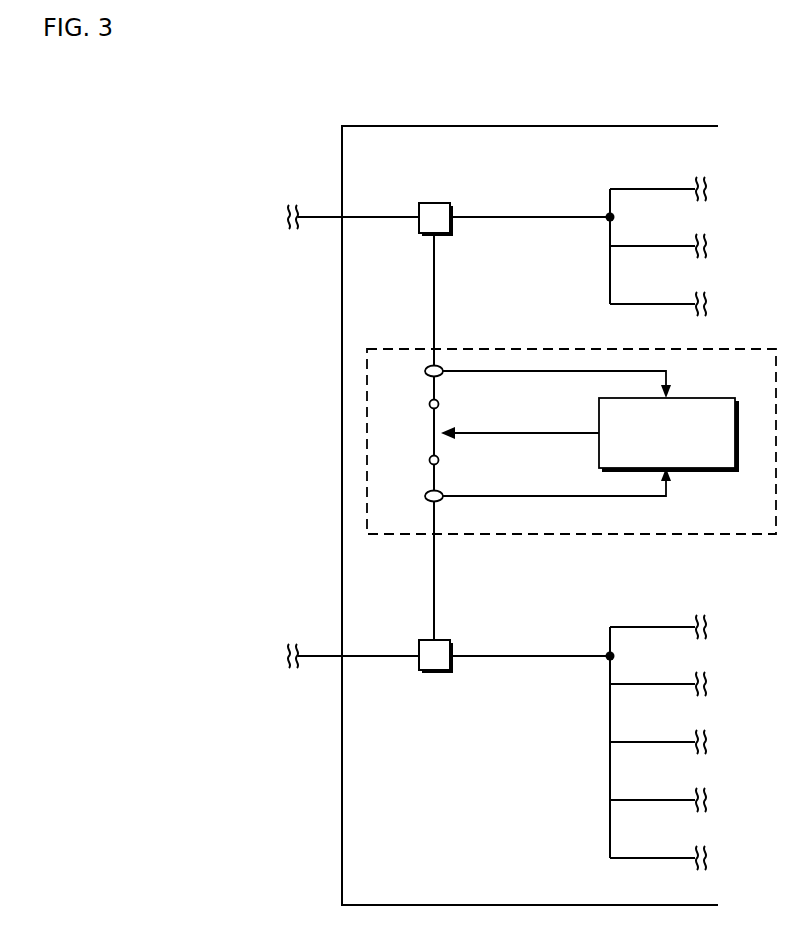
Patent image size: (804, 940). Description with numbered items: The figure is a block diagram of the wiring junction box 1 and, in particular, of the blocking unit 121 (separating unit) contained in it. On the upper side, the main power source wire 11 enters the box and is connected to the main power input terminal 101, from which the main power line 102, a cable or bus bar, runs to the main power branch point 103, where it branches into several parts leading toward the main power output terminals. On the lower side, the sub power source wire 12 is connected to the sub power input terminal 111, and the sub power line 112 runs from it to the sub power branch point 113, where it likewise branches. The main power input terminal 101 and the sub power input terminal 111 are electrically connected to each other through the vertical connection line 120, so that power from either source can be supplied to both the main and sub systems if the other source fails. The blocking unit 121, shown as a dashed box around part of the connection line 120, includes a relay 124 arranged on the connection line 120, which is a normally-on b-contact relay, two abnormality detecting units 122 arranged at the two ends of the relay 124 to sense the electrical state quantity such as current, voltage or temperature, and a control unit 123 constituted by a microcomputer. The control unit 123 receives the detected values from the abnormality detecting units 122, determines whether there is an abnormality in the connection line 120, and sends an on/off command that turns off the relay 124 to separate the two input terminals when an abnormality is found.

The wiring junction box 1 is at (460, 126).
The main power source wire 11 is at (322, 217).
The sub power source wire 12 is at (322, 656).
The main power input terminal 101 is at (432, 203).
The main power line 102 is at (527, 216).
The main power branch point 103 is at (606, 222).
The sub power input terminal 111 is at (434, 673).
The sub power line 112 is at (516, 656).
The sub power branch point 113 is at (606, 660).
The connection line 120 is at (436, 578).
The blocking unit 121 is at (473, 345).
The abnormality detecting unit 122 is at (443, 375).
The control unit 123 is at (689, 398).
The relay 124 is at (420, 434).